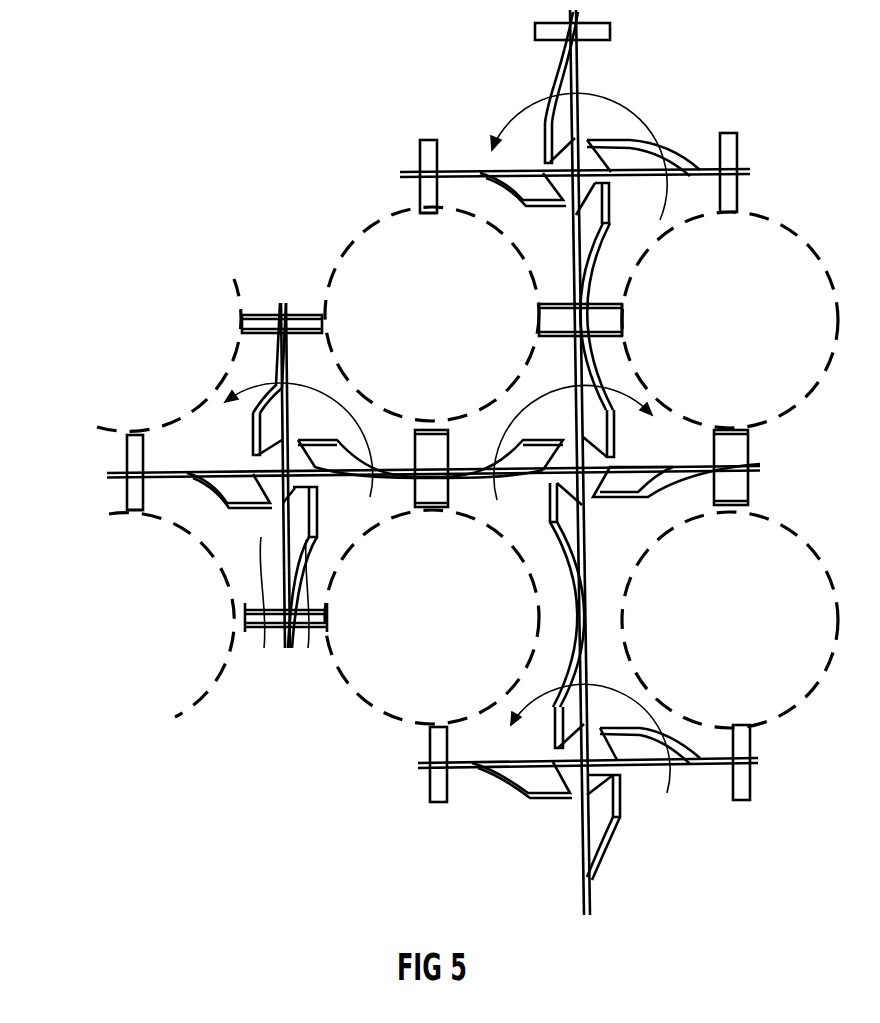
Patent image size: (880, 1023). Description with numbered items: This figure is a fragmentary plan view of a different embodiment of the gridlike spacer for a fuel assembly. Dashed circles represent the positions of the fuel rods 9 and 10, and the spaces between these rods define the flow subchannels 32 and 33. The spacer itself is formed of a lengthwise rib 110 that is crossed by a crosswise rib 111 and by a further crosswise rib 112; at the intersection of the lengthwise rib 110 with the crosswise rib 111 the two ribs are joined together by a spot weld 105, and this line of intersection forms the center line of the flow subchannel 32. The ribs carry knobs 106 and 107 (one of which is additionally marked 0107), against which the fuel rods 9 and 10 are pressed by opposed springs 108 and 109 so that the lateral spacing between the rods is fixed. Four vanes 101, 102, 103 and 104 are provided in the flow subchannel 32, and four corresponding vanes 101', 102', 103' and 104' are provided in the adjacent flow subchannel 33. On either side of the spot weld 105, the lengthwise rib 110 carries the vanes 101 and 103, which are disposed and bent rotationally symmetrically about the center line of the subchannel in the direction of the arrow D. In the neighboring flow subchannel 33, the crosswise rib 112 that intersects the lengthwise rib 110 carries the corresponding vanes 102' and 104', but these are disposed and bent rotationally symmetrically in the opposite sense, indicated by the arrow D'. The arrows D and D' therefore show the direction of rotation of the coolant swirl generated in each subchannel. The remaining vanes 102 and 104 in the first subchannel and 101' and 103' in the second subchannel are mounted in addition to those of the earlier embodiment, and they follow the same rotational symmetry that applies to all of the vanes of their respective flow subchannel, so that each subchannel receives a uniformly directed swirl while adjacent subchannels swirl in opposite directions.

The fuel rod 9 is at (207, 265).
The fuel rod 10 is at (358, 268).
The flow subchannel 32 is at (261, 606).
The flow subchannel 33 is at (512, 523).
The vane 101 is at (212, 518).
The vane 101' is at (496, 422).
The vane 102 is at (308, 613).
The vane 102' is at (533, 595).
The vane 103 is at (364, 422).
The vane 103' is at (676, 439).
The vane 104 is at (237, 368).
The vane 104' is at (634, 320).
The spot weld 105 is at (285, 500).
The knob 106 is at (550, 320).
The knob 107 is at (138, 510).
The bearing element 0107 is at (421, 198).
The spring 108 is at (620, 323).
The spring 109 is at (136, 437).
The lengthwise rib 110 is at (123, 477).
The crosswise rib 111 is at (280, 317).
The crosswise rib 112 is at (590, 877).
The arrow D is at (284, 423).
The arrow D' is at (573, 442).